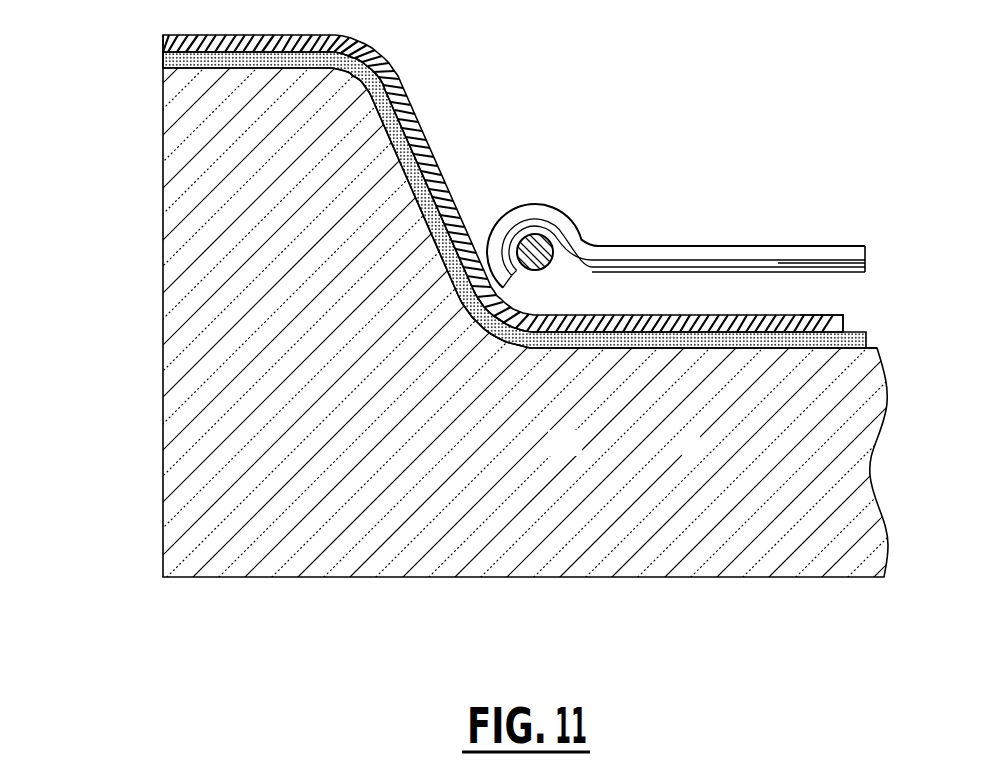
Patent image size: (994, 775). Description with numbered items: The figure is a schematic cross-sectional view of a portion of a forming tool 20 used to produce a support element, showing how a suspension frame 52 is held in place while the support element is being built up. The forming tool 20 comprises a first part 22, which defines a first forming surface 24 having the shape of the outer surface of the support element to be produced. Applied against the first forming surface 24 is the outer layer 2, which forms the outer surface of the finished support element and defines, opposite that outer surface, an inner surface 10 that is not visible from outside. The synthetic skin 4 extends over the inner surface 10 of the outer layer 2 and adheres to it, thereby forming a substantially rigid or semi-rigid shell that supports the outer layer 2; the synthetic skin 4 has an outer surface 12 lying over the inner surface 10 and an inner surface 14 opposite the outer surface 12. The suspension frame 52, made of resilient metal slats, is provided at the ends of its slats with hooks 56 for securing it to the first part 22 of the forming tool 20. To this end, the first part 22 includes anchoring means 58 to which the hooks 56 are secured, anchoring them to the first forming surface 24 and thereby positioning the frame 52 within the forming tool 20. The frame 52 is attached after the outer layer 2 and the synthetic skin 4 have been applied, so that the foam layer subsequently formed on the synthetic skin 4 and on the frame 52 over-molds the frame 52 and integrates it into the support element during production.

The outer layer 2 is at (686, 350).
The synthetic skin 4 is at (846, 326).
The inner surface 10 is at (737, 262).
The outer surface 12 is at (667, 333).
The inner surface 14 is at (625, 316).
The forming tool 20 is at (150, 402).
The first part 22 is at (198, 475).
The first forming surface 24 is at (566, 350).
The suspension frame 52 is at (837, 258).
The hooks 56 is at (540, 212).
The anchoring means 58 is at (530, 246).